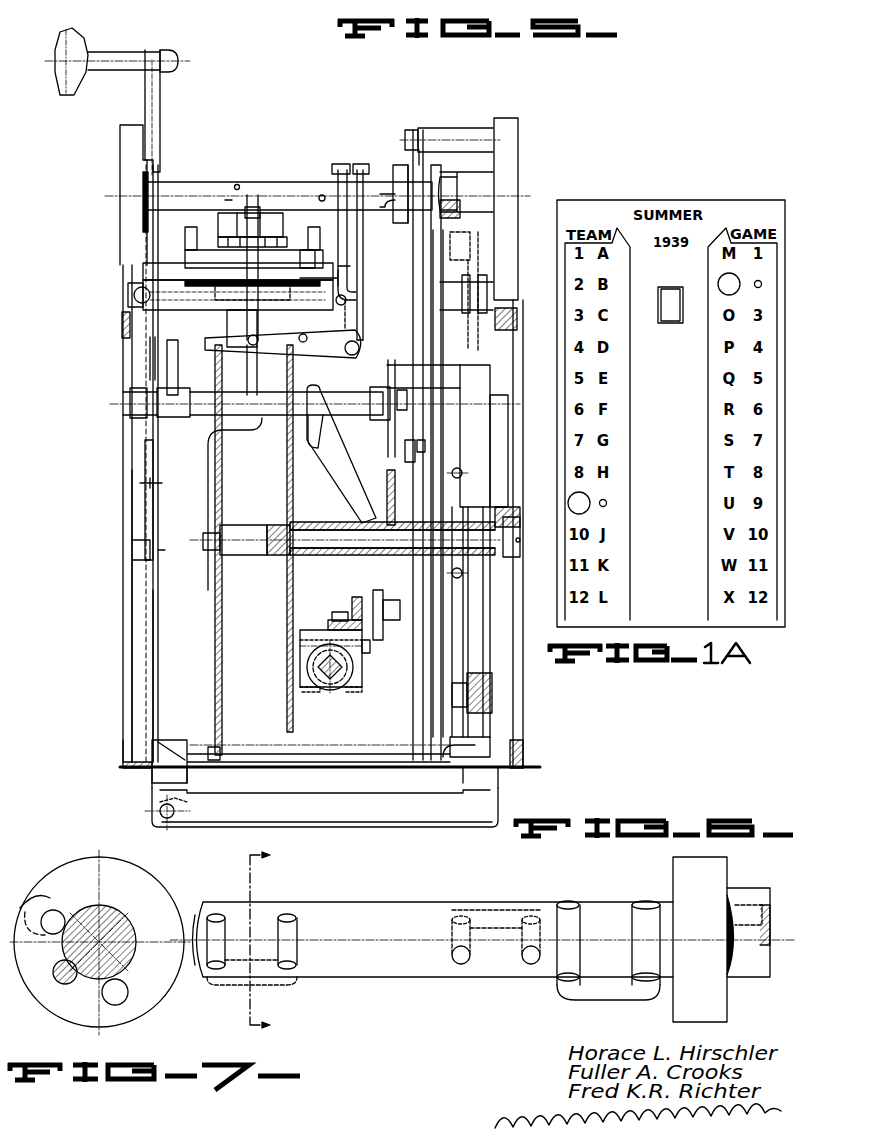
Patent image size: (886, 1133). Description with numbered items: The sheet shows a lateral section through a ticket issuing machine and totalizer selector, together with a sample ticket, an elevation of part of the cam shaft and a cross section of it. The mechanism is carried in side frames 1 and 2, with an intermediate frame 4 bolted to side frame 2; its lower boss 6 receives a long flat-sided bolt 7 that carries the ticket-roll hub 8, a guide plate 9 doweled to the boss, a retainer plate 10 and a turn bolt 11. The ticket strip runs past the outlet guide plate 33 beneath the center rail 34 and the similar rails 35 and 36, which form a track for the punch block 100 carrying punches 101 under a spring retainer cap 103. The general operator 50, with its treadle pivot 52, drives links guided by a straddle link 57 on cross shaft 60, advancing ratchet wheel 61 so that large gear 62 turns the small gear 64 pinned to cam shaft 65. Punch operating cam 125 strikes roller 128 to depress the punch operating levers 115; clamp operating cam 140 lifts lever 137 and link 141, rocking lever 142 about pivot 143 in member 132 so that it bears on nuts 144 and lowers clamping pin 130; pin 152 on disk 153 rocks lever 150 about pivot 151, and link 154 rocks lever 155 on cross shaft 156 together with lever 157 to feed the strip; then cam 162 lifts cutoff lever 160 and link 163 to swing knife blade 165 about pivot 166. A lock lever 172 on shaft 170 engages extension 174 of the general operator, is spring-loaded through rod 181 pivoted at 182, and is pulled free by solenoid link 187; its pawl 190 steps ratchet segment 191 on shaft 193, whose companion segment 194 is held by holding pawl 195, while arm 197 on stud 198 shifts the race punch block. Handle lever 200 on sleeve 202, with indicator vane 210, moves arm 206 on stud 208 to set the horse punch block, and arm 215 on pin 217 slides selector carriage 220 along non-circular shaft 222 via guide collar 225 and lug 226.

In FIG. 5, the side frame 1 is at (125, 572).
In FIG. 5, the side frame 2 is at (508, 445).
In FIG. 5, the intermediate frame 4 is at (395, 496).
In FIG. 5, the double elongated boss 6 is at (385, 556).
In FIG. 5, the long flat-sided bolt 7 is at (335, 535).
In FIG. 6, the long flat-sided bolt 7 is at (267, 941).
In FIG. 5, the hub 8 is at (255, 548).
In FIG. 5, the guide plate 9 is at (293, 503).
In FIG. 5, the retainer plate 10 is at (222, 503).
In FIG. 5, the turn bolt 11 is at (205, 548).
In FIG. 5, the outlet guide plate 33 is at (228, 330).
In FIG. 5, the center rail 34 is at (290, 252).
In FIG. 5, the rail 35 is at (318, 252).
In FIG. 5, the rail 36 is at (180, 268).
In FIG. 5, the general operator 50 is at (492, 690).
In FIG. 5, the pivot 52 is at (452, 697).
In FIG. 5, the straddle link 57 is at (470, 292).
In FIG. 5, the cross shaft 60 is at (348, 302).
In FIG. 5, the ratchet wheel 61 is at (470, 318).
In FIG. 5, the large gear 62 is at (435, 222).
In FIG. 5, the small gear 64 is at (443, 175).
In FIG. 5, the cam shaft 65 is at (180, 190).
In FIG. 6, the cam shaft 65 is at (366, 905).
In FIG. 7, the cam shaft 65 is at (108, 906).
In FIG. 5, the punch block 100 is at (222, 300).
In FIG. 5, the punch 101 is at (230, 222).
In FIG. 5, the spring retainer cap 103 is at (220, 241).
In FIG. 5, the punch operating lever 115 is at (228, 213).
In FIG. 5, the punch operating cam 125 is at (237, 184).
In FIG. 6, the punch operating cam 125 is at (287, 979).
In FIG. 7, the punch operating cam 125 is at (60, 988).
In FIG. 5, the roller 128 is at (253, 192).
In FIG. 5, the clamping pin 130 is at (255, 337).
In FIG. 5, the guide member 132 is at (210, 347).
In FIG. 5, the clamp operating lever 137 is at (360, 165).
In FIG. 5, the clamp operating cam 140 is at (383, 208).
In FIG. 6, the clamp operating cam 140 is at (557, 993).
In FIG. 7, the clamp operating cam 140 is at (128, 992).
In FIG. 5, the link 141 is at (363, 324).
In FIG. 5, the lever 142 is at (352, 356).
In FIG. 5, the pivot 143 is at (305, 352).
In FIG. 5, the nuts 144 is at (248, 359).
In FIG. 5, the lever 150 is at (413, 244).
In FIG. 5, the pivot 151 is at (406, 135).
In FIG. 5, the pin 152 is at (420, 150).
In FIG. 6, the pin 152 is at (757, 898).
In FIG. 7, the pin 152 is at (38, 888).
In FIG. 5, the disk 153 is at (395, 166).
In FIG. 6, the disk 153 is at (673, 883).
In FIG. 7, the disk 153 is at (130, 870).
In FIG. 5, the link 154 is at (410, 462).
In FIG. 5, the lever 155 is at (443, 665).
In FIG. 5, the cross shaft 156 is at (392, 742).
In FIG. 5, the lever 157 is at (208, 665).
In FIG. 5, the cutoff lever 160 is at (338, 165).
In FIG. 5, the cam 162 is at (320, 195).
In FIG. 6, the cam 162 is at (492, 908).
In FIG. 7, the cam 162 is at (60, 915).
In FIG. 5, the link 163 is at (350, 266).
In FIG. 5, the knife blade 165 is at (344, 312).
In FIG. 5, the pivot 166 is at (134, 295).
In FIG. 5, the shaft 170 is at (392, 364).
In FIG. 5, the lock lever 172 is at (480, 470).
In FIG. 5, the extension 174 is at (483, 615).
In FIG. 5, the rod 181 is at (450, 577).
In FIG. 5, the pivot 182 is at (452, 573).
In FIG. 5, the link 187 is at (462, 478).
In FIG. 5, the pawl 190 is at (390, 473).
In FIG. 5, the ratchet segment 191 is at (398, 420).
In FIG. 5, the shaft 193 is at (378, 387).
In FIG. 5, the ratchet segment 194 is at (152, 370).
In FIG. 5, the holding pawl 195 is at (148, 503).
In FIG. 5, the arm 197 is at (325, 425).
In FIG. 5, the stud 198 is at (345, 286).
In FIG. 5, the handle lever 200 is at (160, 95).
In FIG. 5, the sleeve 202 is at (198, 416).
In FIG. 5, the arm 206 is at (177, 355).
In FIG. 5, the stud 208 is at (143, 279).
In FIG. 5, the indicator vane 210 is at (146, 95).
In FIG. 5, the arm 215 is at (338, 466).
In FIG. 5, the pin 217 is at (384, 616).
In FIG. 5, the selector carriage 220 is at (330, 626).
In FIG. 5, the non-circular shaft 222 is at (318, 688).
In FIG. 5, the guide collar 225 is at (307, 665).
In FIG. 5, the lug 226 is at (354, 665).